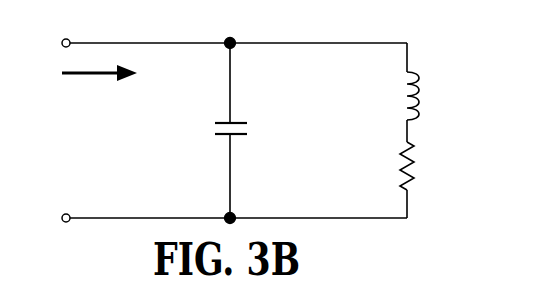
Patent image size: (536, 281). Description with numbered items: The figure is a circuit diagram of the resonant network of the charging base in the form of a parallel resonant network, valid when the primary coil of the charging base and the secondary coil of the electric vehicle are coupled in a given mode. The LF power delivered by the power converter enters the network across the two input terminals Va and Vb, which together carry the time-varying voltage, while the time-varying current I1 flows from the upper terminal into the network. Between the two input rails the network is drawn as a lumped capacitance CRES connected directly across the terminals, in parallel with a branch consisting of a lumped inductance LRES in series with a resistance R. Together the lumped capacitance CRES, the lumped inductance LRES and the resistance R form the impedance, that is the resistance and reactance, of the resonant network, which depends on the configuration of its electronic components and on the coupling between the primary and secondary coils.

The time-varying voltage terminal Va is at (51, 43).
The time-varying voltage terminal Vb is at (51, 219).
The time-varying current I1 is at (98, 76).
The lumped capacitance CRES is at (249, 130).
The lumped inductance LRES is at (436, 107).
The resistance R is at (419, 166).